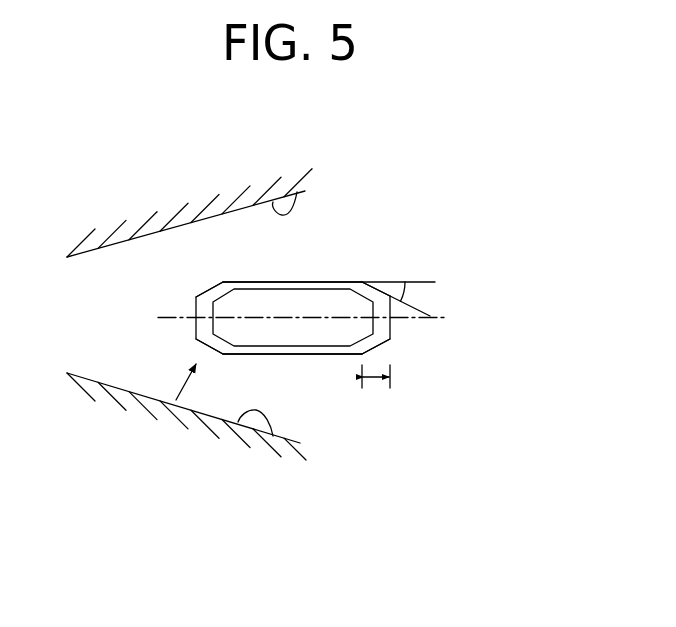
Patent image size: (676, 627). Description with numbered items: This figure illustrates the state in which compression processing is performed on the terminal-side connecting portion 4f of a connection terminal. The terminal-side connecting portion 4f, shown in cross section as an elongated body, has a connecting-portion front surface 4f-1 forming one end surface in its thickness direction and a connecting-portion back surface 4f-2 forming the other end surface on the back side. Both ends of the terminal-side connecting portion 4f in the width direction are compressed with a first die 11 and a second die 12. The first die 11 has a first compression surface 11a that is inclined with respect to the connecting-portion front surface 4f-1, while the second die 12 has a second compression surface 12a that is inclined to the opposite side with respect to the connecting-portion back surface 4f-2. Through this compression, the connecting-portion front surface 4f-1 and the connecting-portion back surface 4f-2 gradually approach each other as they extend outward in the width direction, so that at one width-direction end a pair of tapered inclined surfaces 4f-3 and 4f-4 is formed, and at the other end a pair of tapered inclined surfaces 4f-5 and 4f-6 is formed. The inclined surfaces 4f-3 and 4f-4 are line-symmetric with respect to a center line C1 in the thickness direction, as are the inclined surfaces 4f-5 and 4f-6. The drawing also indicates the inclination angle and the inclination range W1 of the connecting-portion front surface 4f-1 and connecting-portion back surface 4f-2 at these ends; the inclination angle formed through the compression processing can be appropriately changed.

The first die 11 is at (196, 270).
The first compression surface 11a is at (297, 192).
The second die 12 is at (198, 435).
The second compression surface 12a is at (273, 436).
The terminal-side connecting portion 4f is at (308, 298).
The connecting-portion front surface 4f-1 is at (344, 282).
The connecting-portion back surface 4f-2 is at (313, 355).
The inclined surface 4f-3 is at (381, 291).
The inclined surface 4f-4 is at (383, 345).
The inclined surface 4f-5 is at (212, 288).
The inclined surface 4f-6 is at (202, 348).
The center line C1 is at (418, 320).
The inclination range W1 is at (357, 385).